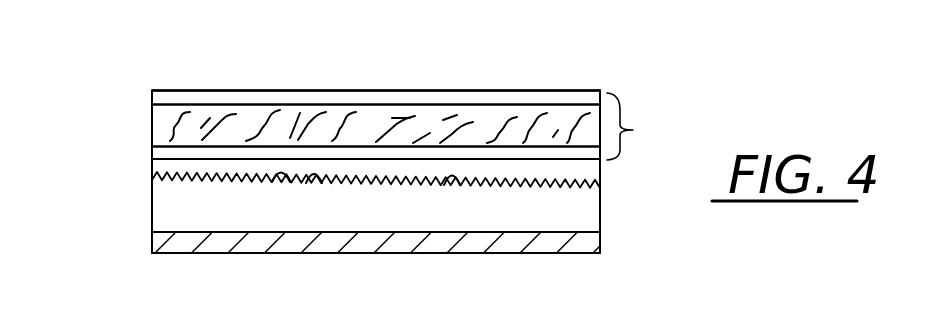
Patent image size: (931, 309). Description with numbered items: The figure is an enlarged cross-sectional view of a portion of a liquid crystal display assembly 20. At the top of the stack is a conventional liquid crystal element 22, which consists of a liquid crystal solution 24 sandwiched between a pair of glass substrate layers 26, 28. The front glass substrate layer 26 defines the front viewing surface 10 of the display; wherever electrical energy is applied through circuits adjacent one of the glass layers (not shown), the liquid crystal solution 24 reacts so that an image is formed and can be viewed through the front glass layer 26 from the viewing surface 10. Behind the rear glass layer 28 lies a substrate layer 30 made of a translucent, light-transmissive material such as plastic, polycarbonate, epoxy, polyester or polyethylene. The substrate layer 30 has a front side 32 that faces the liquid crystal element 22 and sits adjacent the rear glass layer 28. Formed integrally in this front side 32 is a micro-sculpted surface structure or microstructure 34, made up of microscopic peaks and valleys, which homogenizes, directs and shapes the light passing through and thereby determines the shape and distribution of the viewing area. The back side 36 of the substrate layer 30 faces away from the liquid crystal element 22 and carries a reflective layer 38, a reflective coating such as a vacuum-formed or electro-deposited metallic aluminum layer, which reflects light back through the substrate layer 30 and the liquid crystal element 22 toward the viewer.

The front viewing surface 10 is at (334, 84).
The liquid crystal display assembly 20 is at (166, 65).
The liquid crystal element 22 is at (642, 126).
The liquid crystal solution 24 is at (165, 122).
The glass substrate layer 26 is at (163, 97).
The rear glass layer 28 is at (165, 152).
The substrate layer 30 is at (587, 218).
The front side 32 is at (165, 173).
The microstructure 34 is at (288, 179).
The back side 36 is at (315, 232).
The reflective layer 38 is at (420, 245).